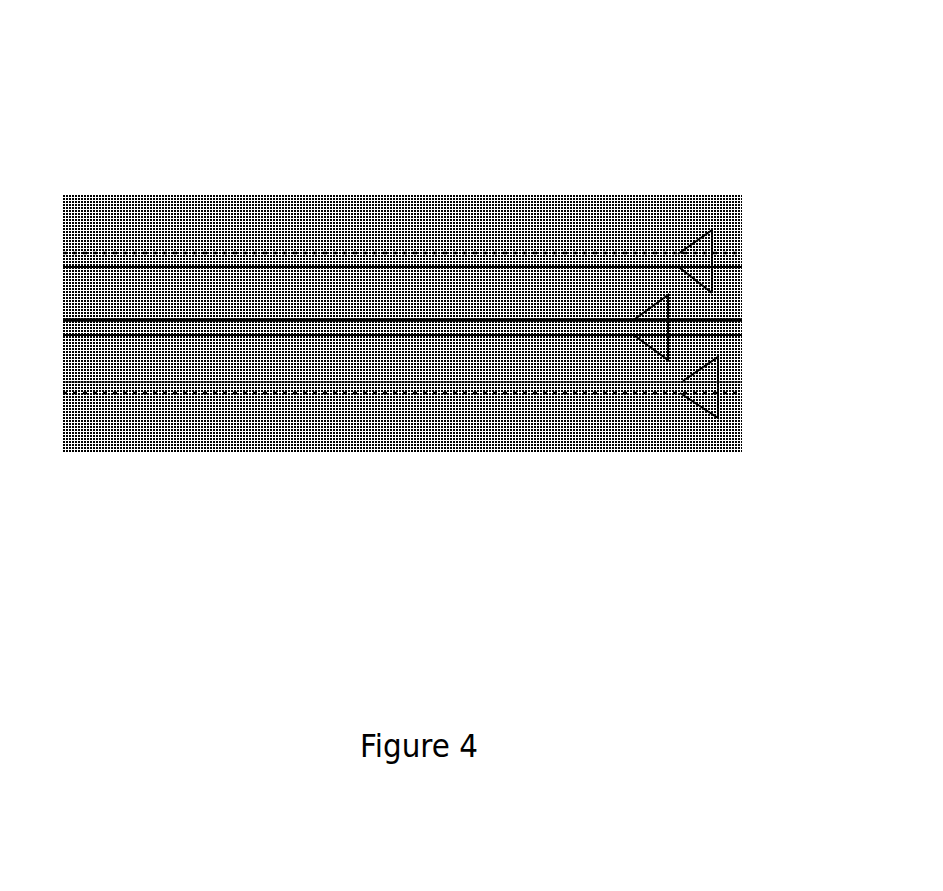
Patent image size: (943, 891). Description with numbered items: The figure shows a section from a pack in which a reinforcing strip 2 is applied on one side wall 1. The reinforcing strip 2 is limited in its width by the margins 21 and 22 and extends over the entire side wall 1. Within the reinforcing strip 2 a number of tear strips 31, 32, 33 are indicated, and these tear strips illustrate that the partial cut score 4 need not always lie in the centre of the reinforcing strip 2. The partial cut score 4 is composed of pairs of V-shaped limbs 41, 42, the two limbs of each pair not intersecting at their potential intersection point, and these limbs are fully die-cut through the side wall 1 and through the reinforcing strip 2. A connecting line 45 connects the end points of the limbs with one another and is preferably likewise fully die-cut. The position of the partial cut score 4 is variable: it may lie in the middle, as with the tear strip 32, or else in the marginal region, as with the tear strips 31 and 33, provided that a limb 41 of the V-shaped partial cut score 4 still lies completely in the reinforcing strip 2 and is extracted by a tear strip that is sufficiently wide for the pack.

The side wall 1 is at (173, 215).
The reinforcing strip 2 is at (173, 362).
The margin 21 is at (343, 252).
The margin 22 is at (359, 392).
The tear strip 31 is at (595, 385).
The tear strip 32 is at (526, 335).
The tear strip 33 is at (525, 260).
The partial cut score 4 is at (687, 267).
The V-shaped limb 41 is at (695, 280).
The V-shaped limb 42 is at (699, 240).
The connecting line 45 is at (712, 263).